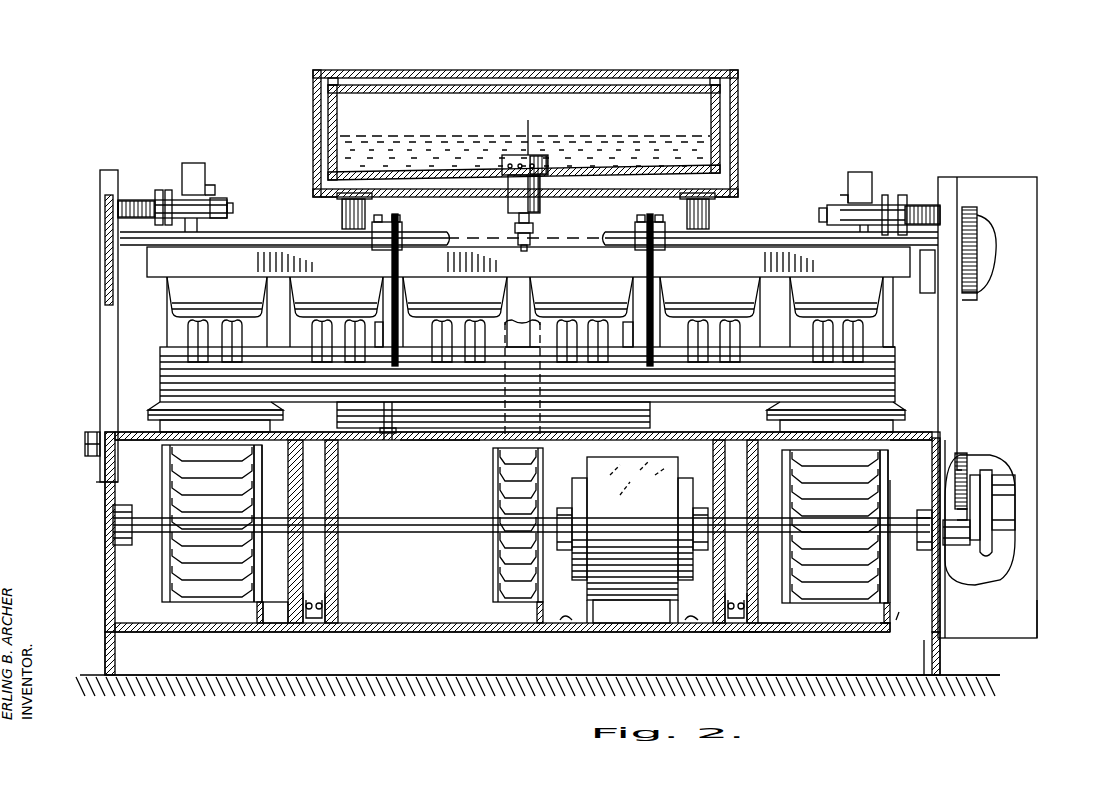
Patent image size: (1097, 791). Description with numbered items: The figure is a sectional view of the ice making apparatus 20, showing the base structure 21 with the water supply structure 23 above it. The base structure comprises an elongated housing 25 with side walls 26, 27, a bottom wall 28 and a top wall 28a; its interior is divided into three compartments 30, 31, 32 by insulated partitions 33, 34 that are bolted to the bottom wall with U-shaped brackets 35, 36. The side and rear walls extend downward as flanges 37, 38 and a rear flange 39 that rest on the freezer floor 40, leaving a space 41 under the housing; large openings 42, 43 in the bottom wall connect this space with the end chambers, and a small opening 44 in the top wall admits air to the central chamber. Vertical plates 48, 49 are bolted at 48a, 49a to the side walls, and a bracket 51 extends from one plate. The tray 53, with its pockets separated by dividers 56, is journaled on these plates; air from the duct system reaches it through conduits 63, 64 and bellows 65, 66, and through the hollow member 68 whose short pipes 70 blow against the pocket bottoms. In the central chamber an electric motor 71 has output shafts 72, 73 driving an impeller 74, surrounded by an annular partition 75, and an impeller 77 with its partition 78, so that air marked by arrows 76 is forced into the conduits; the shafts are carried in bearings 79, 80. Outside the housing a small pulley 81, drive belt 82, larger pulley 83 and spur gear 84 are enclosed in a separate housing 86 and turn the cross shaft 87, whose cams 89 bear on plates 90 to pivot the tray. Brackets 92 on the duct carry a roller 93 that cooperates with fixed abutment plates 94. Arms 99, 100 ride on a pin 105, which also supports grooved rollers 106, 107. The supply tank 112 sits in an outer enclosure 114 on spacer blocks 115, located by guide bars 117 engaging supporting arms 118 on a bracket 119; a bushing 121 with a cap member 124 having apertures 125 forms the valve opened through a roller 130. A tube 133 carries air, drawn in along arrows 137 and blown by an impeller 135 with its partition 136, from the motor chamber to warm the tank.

The ice making apparatus 20 is at (806, 158).
The base structure 21 is at (98, 603).
The water supply structure 23 is at (305, 134).
The housing 25 is at (358, 633).
The side wall 26 is at (940, 615).
The side wall 27 is at (115, 588).
The bottom wall 28 is at (690, 633).
The top wall 28a is at (423, 440).
The compartment 30 is at (450, 459).
The compartment 31 is at (911, 460).
The compartment 32 is at (137, 453).
The partition 33 is at (735, 596).
The partition 34 is at (330, 496).
The U-shaped bracket 35 is at (748, 634).
The U-shaped bracket 36 is at (310, 596).
The side flange 37 is at (940, 658).
The side flange 38 is at (115, 652).
The rear flange 39 is at (518, 668).
The floor 40 is at (848, 697).
The space 41 is at (502, 645).
The opening 42 is at (893, 636).
The opening 43 is at (268, 633).
The opening 44 is at (670, 436).
The vertical plate 48 is at (957, 340).
The bolt 48a is at (958, 445).
The vertical plate 49 is at (100, 352).
The bolt 49a is at (92, 458).
The bracket 51 is at (106, 218).
The ice mold or tray 53 is at (296, 258).
The transverse partitions or dividers 56 is at (286, 300).
The conduit 63 is at (886, 336).
The conduit 64 is at (182, 330).
The flexible bellows 65 is at (895, 408).
The flexible bellows 66 is at (160, 412).
The hollow member 68 is at (160, 369).
The short pipes 70 is at (438, 336).
The electric motor 71 is at (642, 592).
The output shaft 72 is at (732, 524).
The output shaft 73 is at (390, 533).
The rotary impeller 74 is at (825, 590).
The annular partition 75 is at (884, 617).
The arrows 76 is at (922, 660).
The impeller 77 is at (204, 585).
The annular partition 78 is at (256, 614).
The bearing 79 is at (900, 555).
The bearing 80 is at (127, 506).
The small pulley 81 is at (958, 546).
The drive belt 82 is at (1005, 491).
The pulley 83 is at (996, 475).
The spur gear 84 is at (968, 460).
The housing 86 is at (1030, 580).
The rotary cross shaft 87 is at (238, 240).
The cams 89 is at (400, 266).
The rigid plates 90 is at (380, 263).
The brackets 92 is at (337, 411).
The roller 93 is at (388, 440).
The abutment plates 94 is at (383, 333).
The arm 99 is at (872, 175).
The arm 100 is at (205, 170).
The pin 105 is at (190, 232).
The grooved roller 106 is at (915, 205).
The grooved roller 107 is at (140, 200).
The water supply tank 112 is at (550, 95).
The outer enclosure 114 is at (606, 78).
The spacer blocks 115 is at (338, 80).
The guide bars 117 is at (372, 196).
The supporting arms 118 is at (338, 197).
The bracket 119 is at (342, 214).
The bushing 121 is at (509, 212).
The cap member 124 is at (528, 125).
The apertures 125 is at (549, 164).
The roller 130 is at (534, 240).
The flexible tube 133 is at (542, 380).
The impeller 135 is at (493, 565).
The partition 136 is at (536, 615).
The arrows 137 is at (655, 470).